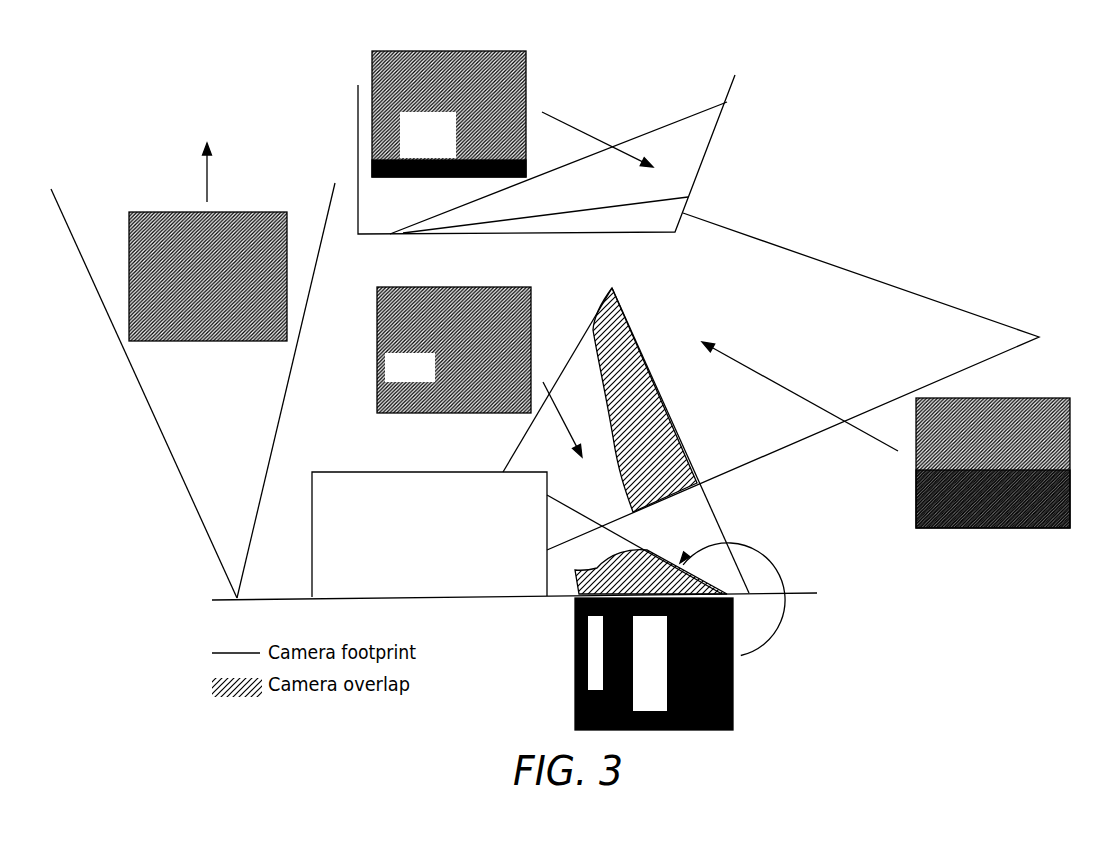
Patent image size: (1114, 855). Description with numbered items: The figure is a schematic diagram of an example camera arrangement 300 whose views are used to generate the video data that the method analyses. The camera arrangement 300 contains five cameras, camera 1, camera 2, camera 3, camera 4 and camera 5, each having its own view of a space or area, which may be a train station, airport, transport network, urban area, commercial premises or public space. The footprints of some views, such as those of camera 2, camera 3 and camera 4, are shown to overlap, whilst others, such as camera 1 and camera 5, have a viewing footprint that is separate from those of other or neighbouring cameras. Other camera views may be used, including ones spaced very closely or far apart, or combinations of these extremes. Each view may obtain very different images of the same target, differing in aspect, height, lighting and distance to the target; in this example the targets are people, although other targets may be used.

The camera arrangement 300 is at (829, 124).
The camera 1 is at (546, 142).
The camera 2 is at (808, 381).
The camera 3 is at (563, 440).
The camera 4 is at (666, 612).
The camera 5 is at (193, 370).